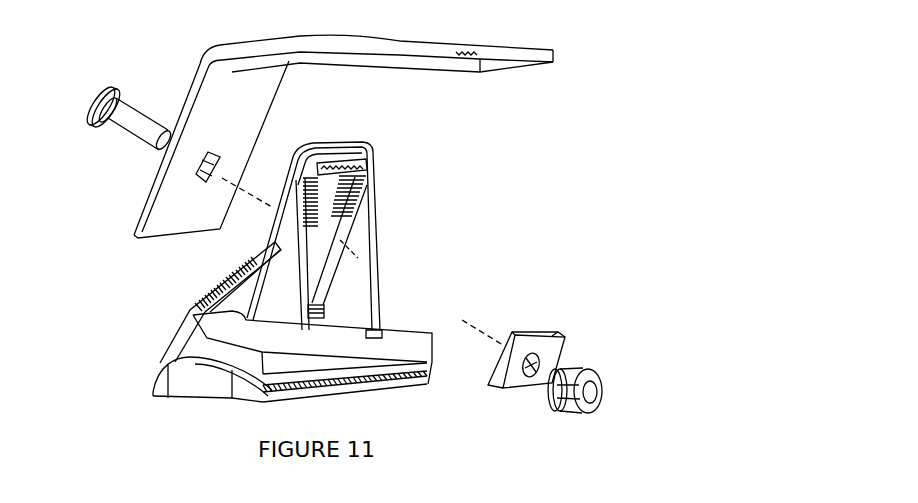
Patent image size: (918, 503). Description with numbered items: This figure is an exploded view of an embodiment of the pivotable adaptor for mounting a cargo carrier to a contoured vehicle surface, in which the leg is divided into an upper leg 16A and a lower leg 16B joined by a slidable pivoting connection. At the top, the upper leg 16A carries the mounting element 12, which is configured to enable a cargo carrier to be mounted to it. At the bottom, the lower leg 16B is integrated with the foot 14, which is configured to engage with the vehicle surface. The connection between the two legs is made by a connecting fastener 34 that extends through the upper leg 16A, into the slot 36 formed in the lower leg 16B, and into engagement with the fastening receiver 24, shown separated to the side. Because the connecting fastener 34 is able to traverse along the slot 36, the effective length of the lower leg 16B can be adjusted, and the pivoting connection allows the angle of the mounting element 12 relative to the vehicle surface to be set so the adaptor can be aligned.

The mounting element 12 is at (490, 74).
The upper leg 16A is at (153, 202).
The lower leg 16B is at (193, 313).
The connecting fastener 34 is at (138, 126).
The slot 36 is at (323, 193).
The foot 14 is at (162, 388).
The fastening receiver 24 is at (583, 366).